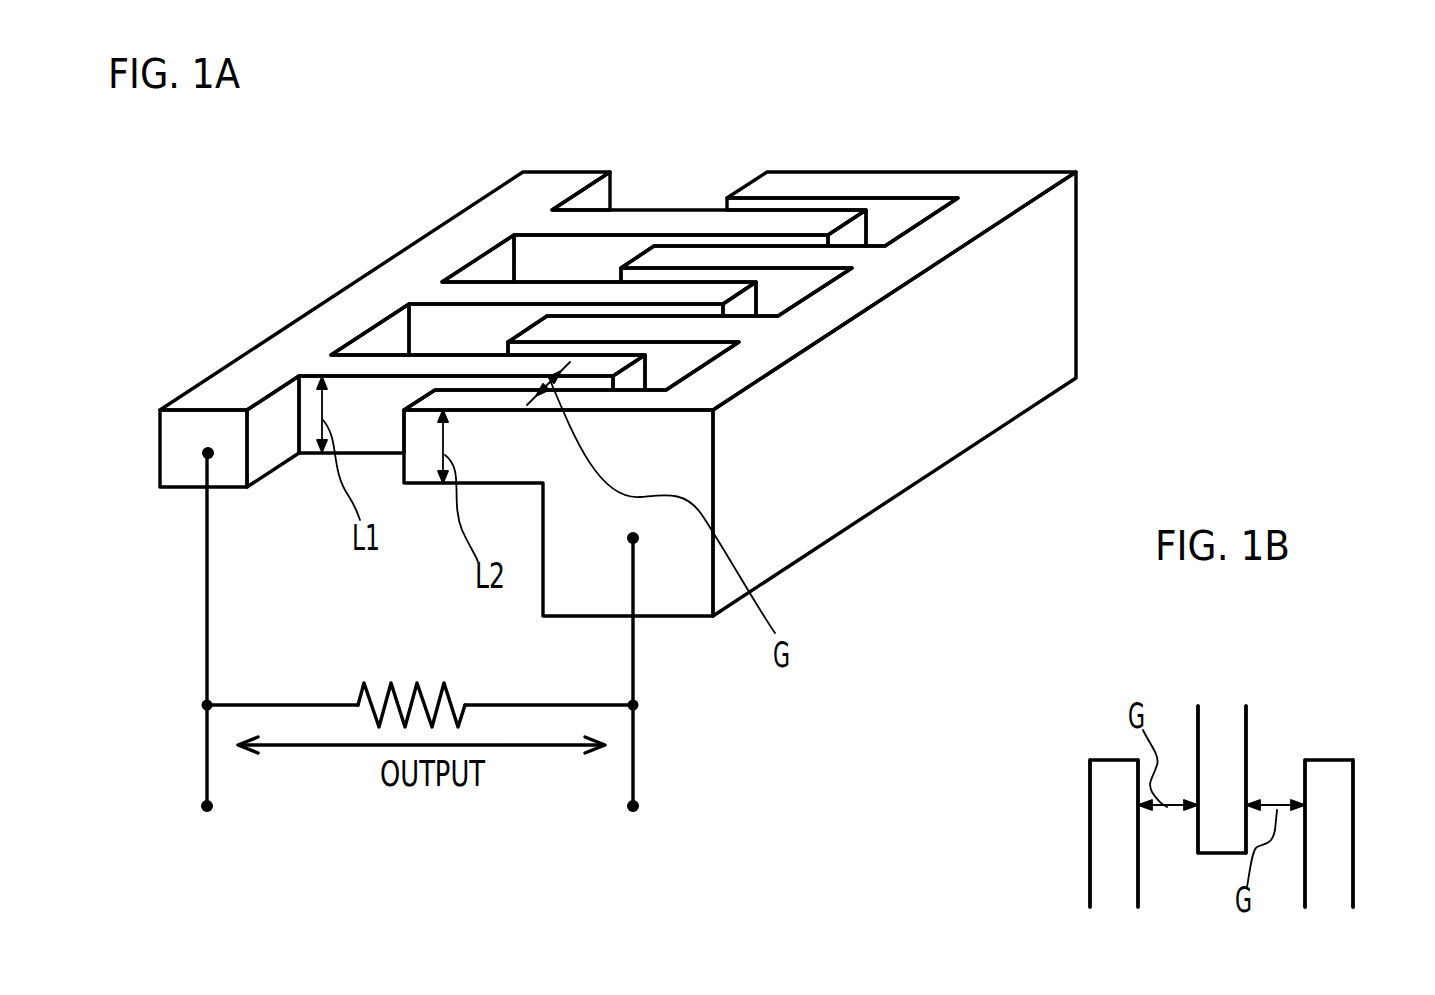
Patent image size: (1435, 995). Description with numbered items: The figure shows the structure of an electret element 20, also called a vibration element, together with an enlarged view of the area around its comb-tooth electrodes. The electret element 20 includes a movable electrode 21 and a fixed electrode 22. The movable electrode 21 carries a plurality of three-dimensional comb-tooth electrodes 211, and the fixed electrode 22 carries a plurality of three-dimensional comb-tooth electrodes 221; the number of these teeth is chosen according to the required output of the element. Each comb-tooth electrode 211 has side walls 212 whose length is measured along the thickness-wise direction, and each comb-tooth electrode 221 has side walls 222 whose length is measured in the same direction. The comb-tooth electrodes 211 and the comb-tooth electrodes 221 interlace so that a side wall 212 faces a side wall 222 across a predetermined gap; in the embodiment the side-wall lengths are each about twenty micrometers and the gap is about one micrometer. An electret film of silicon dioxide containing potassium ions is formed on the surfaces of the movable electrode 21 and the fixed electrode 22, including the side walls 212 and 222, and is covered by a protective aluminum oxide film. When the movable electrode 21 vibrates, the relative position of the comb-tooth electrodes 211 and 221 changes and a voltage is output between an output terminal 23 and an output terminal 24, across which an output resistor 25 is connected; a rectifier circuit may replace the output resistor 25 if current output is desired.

In FIG. 1A, the electret element 20 is at (725, 921).
In FIG. 1A, the movable electrode 21 is at (235, 382).
In FIG. 1A, the fixed electrode 22 is at (760, 550).
In FIG. 1A, the comb-tooth electrode 211 is at (463, 380).
In FIG. 1B, the comb-tooth electrode 211 is at (1223, 810).
In FIG. 1A, the side wall 212 is at (465, 362).
In FIG. 1B, the side wall 212 is at (1198, 778).
In FIG. 1A, the comb-tooth electrode 221 is at (580, 402).
In FIG. 1B, the comb-tooth electrode 221 is at (1103, 810).
In FIG. 1A, the side wall 222 is at (450, 387).
In FIG. 1B, the side wall 222 is at (1090, 857).
In FIG. 1A, the output terminal 23 is at (207, 806).
In FIG. 1A, the output terminal 24 is at (634, 806).
In FIG. 1A, the output resistor 25 is at (385, 683).